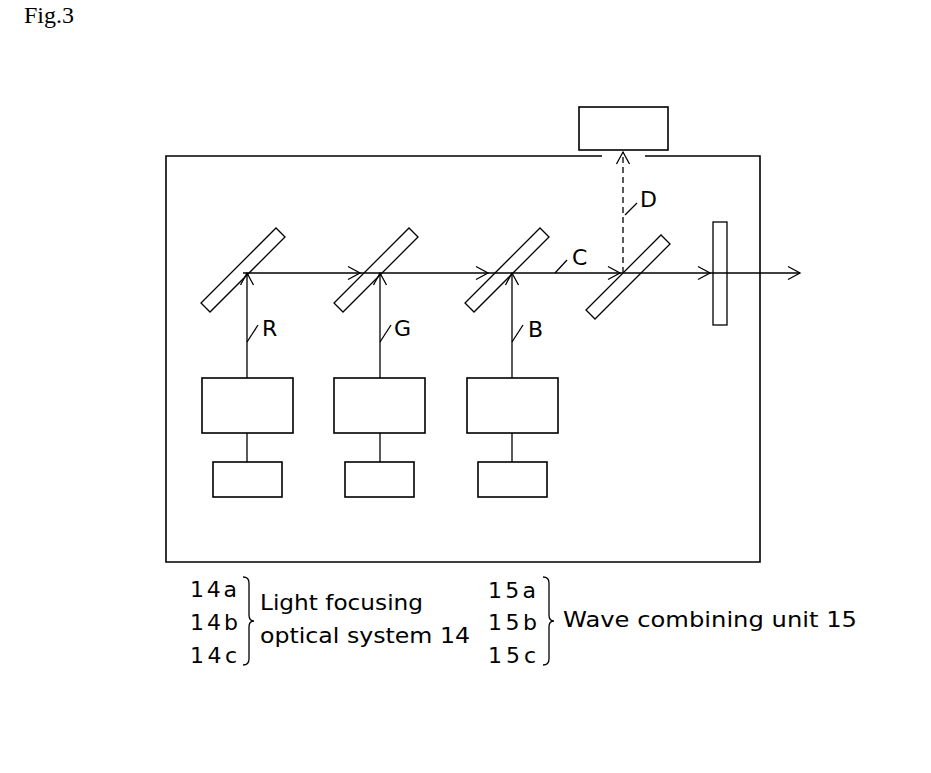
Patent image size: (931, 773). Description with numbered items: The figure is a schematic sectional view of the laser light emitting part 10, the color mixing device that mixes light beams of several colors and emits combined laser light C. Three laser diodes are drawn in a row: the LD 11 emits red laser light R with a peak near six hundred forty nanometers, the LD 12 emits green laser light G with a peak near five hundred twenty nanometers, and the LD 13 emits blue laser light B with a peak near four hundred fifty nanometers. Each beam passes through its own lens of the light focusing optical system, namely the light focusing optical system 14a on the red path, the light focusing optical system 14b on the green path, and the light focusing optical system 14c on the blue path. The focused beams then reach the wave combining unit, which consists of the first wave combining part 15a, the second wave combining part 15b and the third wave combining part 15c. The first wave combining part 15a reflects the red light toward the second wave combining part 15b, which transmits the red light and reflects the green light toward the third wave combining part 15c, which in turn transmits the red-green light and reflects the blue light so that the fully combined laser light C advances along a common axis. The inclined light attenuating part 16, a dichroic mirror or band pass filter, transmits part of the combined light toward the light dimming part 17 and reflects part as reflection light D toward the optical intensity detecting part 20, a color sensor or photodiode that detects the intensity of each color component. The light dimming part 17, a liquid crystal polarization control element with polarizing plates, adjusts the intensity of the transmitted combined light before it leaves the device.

The laser light emitting part 10 is at (328, 142).
The laser diode 11 is at (247, 479).
The laser diode 12 is at (379, 479).
The laser diode 13 is at (512, 479).
The light focusing optical system 14a is at (247, 405).
The light focusing optical system 14b is at (379, 405).
The light focusing optical system 14c is at (512, 405).
The first wave combining part 15a is at (247, 255).
The second wave combining part 15b is at (378, 255).
The third wave combining part 15c is at (511, 255).
The light attenuating part 16 is at (607, 312).
The light dimming part 17 is at (723, 327).
The optical intensity detecting part 20 is at (589, 107).